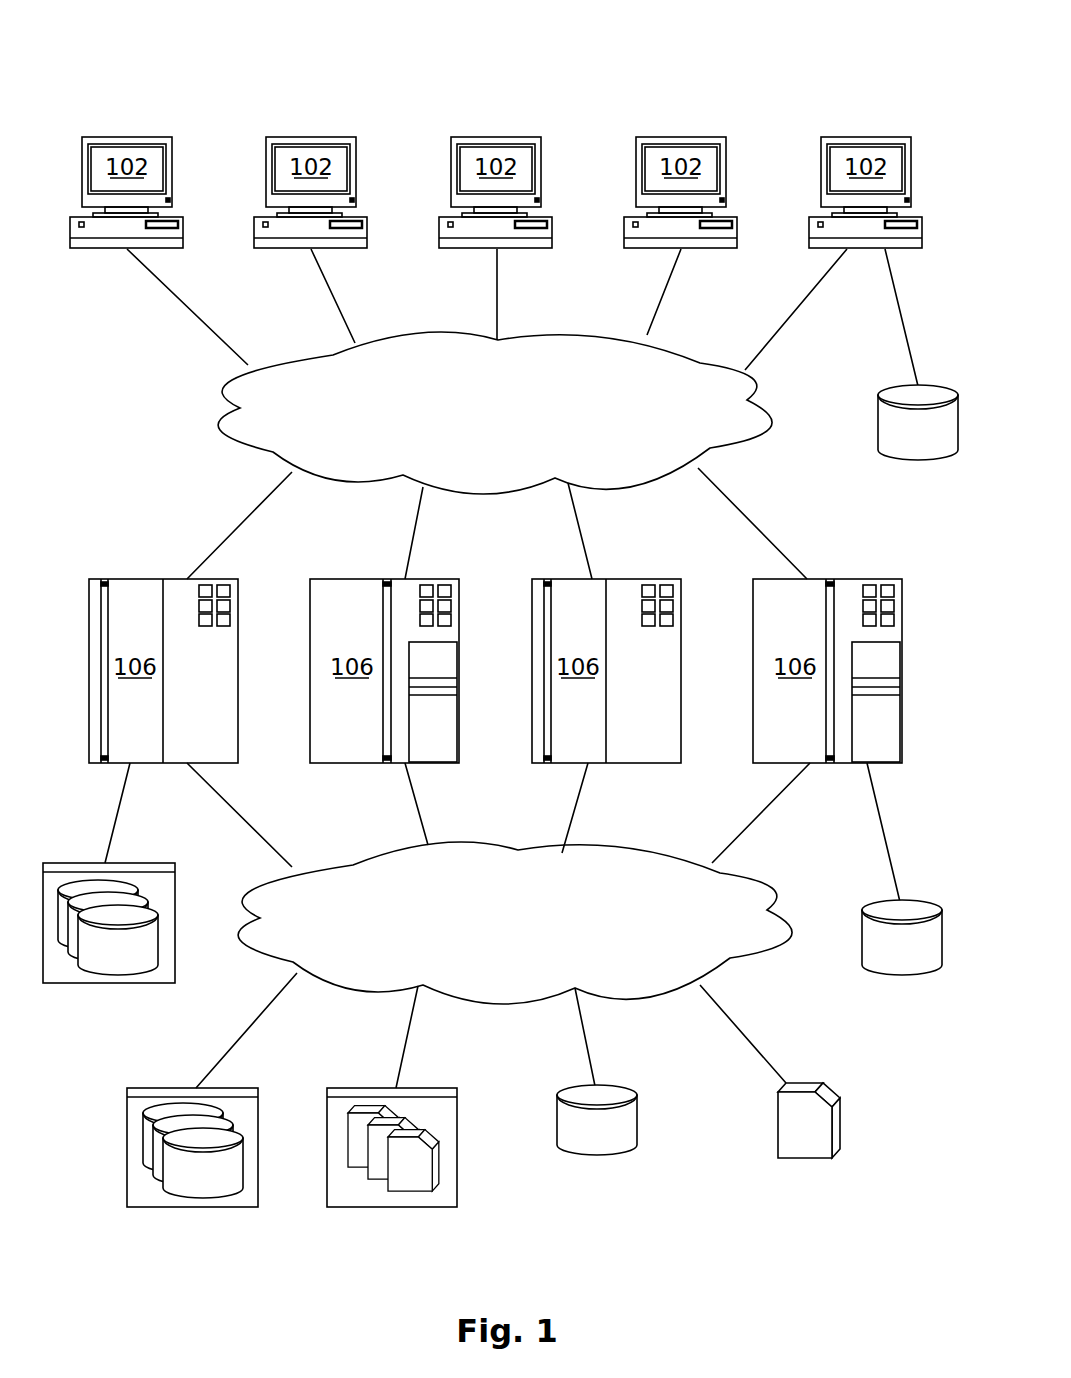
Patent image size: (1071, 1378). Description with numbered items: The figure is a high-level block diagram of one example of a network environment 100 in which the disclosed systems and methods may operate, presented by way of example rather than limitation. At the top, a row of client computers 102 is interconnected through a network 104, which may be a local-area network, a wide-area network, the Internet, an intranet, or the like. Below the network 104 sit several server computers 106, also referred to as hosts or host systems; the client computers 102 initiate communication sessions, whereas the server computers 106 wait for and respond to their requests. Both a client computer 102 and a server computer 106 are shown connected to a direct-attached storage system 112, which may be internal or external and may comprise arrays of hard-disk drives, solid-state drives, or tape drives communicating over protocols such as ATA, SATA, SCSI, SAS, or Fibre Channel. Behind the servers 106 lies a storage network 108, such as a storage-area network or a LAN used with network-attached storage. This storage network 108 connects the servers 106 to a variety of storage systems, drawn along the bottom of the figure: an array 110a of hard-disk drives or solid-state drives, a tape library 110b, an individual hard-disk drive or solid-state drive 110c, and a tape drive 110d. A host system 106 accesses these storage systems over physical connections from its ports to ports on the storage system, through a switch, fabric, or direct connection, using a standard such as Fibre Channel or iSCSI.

The network environment 100 is at (211, 73).
The client computer 102 is at (496, 192).
The network 104 is at (478, 439).
The server computer 106 is at (495, 671).
The storage network 108 is at (496, 949).
The array of hard-disk drives or solid-state drives 110a is at (192, 1207).
The tape library 110b is at (393, 1207).
The individual hard-disk drive or solid-state drive 110c is at (597, 1150).
The tape drive 110d is at (800, 1158).
The direct-attached storage system 112 is at (918, 452).